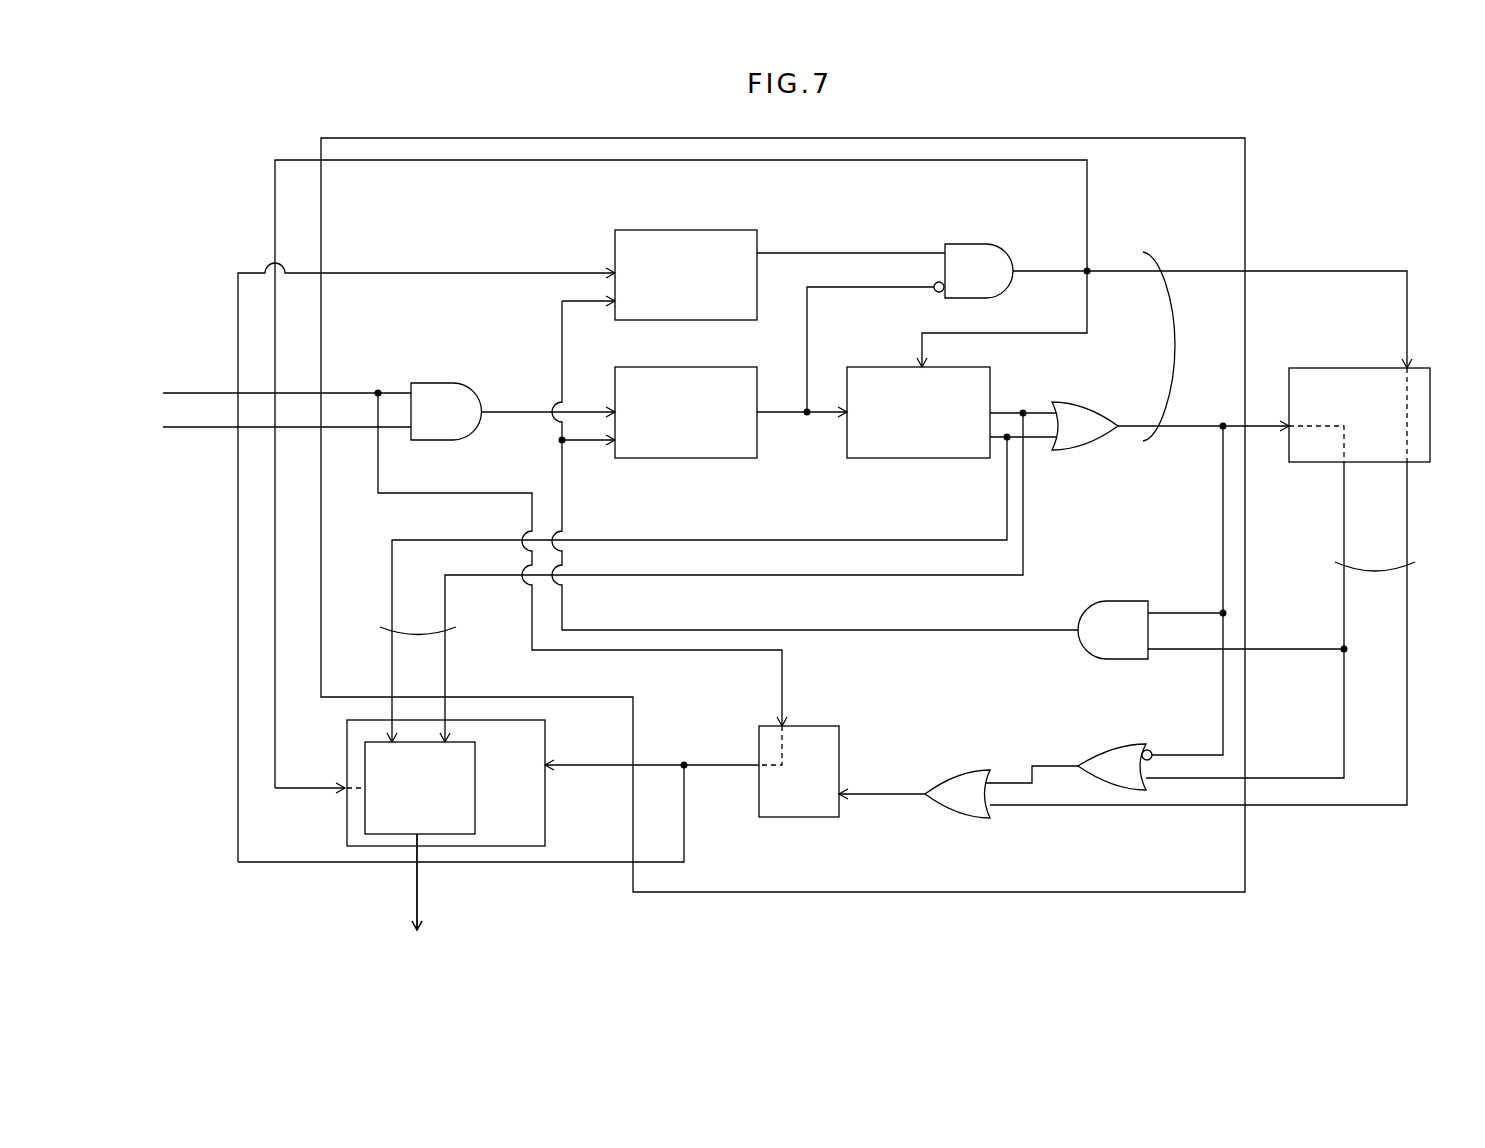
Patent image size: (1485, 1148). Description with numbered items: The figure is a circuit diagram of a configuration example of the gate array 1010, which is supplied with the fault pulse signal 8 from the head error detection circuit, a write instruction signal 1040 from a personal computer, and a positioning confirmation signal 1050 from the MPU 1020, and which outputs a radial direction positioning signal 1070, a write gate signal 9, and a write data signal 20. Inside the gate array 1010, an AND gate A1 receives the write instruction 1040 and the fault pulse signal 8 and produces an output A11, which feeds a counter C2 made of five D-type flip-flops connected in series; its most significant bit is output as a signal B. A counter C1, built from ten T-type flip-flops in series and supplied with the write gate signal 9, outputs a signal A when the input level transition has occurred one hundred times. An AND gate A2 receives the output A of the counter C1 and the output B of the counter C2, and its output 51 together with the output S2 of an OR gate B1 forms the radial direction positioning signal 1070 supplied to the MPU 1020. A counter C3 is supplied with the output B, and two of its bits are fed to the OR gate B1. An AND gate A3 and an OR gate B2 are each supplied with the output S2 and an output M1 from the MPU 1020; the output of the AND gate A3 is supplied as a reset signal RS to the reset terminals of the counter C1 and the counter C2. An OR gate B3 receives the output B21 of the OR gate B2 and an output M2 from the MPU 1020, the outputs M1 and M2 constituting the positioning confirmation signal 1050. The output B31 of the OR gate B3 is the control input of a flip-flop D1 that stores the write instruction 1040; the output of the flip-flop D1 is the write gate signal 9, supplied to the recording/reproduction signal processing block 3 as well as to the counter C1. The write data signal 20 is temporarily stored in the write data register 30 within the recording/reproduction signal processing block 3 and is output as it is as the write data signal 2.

The gate array 1010 is at (1133, 138).
The radial direction positioning signal 1070 is at (1150, 262).
The MPU 1020 is at (1306, 368).
The output of AND gate A2 51 is at (1040, 271).
The write instruction signal 1040 is at (192, 393).
The fault pulse signal 8 is at (190, 427).
The write data signal 20 is at (456, 627).
The write data register 30 is at (475, 790).
The recording/reproduction signal processing block 3 is at (545, 808).
The write data signal 2 is at (417, 893).
The write gate signal 9 is at (718, 765).
The positioning confirmation signal 1050 is at (1415, 562).
The AND gate A1 is at (440, 383).
The AND gate A2 is at (968, 244).
The AND gate A3 is at (1125, 601).
The OR gate B1 is at (1073, 402).
The OR gate B2 is at (1122, 744).
The OR gate B3 is at (968, 770).
The counter C1 is at (677, 230).
The counter C2 is at (703, 458).
The counter C3 is at (910, 458).
The flip-flop D1 is at (813, 726).
The output of counter C1 A is at (858, 253).
The output of AND gate A1 A11 is at (520, 412).
The output of counter C2 B is at (782, 412).
The output of OR gate B2 B21 is at (1050, 766).
The output of OR gate B3 B31 is at (885, 794).
The output of OR gate B1 S2 is at (1130, 426).
The reset signal RS is at (967, 630).
The MPU output M1 is at (1344, 515).
The MPU output M2 is at (1407, 508).